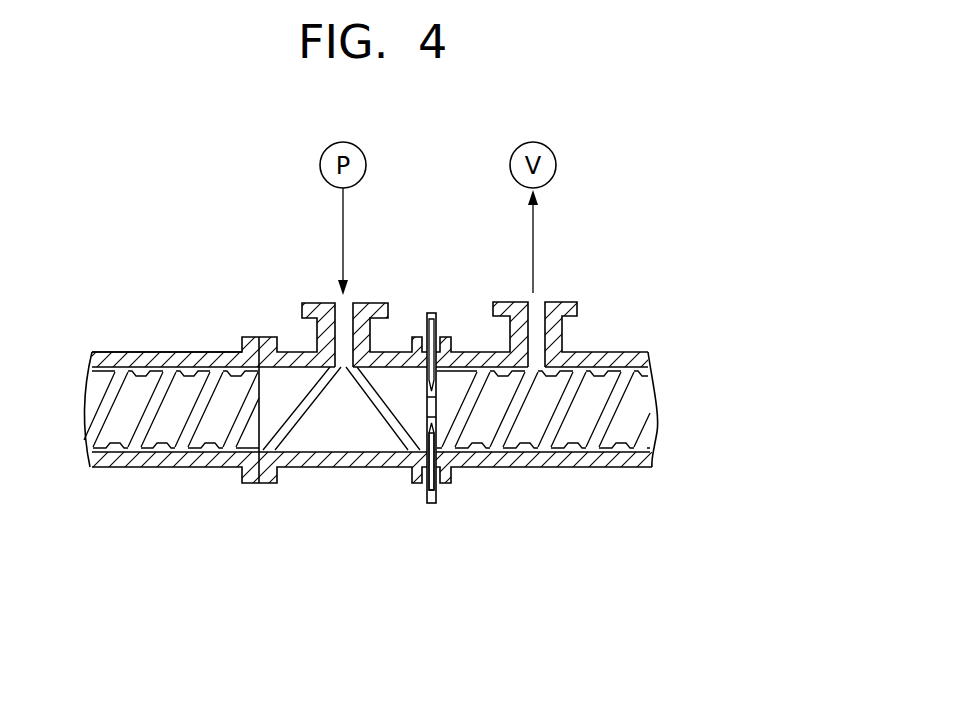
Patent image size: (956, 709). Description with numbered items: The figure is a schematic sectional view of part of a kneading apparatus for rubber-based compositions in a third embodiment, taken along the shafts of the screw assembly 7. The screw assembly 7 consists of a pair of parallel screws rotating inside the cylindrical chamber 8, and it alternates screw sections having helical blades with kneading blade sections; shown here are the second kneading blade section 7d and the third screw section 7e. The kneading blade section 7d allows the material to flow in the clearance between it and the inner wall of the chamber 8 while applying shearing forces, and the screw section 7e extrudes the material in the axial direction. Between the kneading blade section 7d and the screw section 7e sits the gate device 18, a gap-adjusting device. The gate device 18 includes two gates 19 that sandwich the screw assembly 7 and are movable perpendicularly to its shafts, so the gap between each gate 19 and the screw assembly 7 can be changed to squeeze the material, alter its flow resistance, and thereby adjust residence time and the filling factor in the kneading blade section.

The screw assembly 7 is at (157, 428).
The second kneading blade section 7d is at (344, 432).
The third screw section 7e is at (560, 430).
The cylindrical chamber 8 is at (171, 362).
The gate device 18 is at (433, 303).
The gate 19 is at (438, 497).